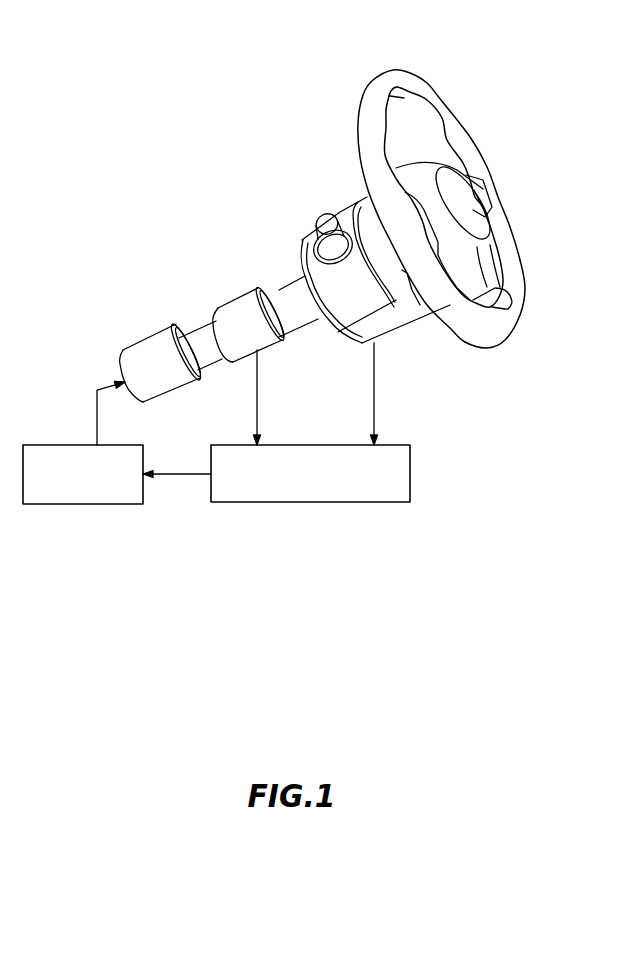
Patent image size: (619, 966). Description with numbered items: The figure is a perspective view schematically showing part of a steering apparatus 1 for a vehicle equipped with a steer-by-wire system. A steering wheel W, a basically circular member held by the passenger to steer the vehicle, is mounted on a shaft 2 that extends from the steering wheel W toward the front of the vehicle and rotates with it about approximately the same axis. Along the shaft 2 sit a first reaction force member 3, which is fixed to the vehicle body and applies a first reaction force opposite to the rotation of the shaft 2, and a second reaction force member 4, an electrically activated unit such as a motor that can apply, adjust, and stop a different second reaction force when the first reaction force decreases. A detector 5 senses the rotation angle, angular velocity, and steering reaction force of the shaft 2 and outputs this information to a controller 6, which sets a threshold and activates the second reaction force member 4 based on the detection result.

The steering apparatus 1 is at (172, 133).
The steering wheel W is at (373, 90).
The shaft 2 is at (286, 291).
The first reaction force member 3 is at (235, 308).
The second reaction force member 4 is at (143, 344).
The detector 5 is at (411, 474).
The controller 6 is at (101, 505).